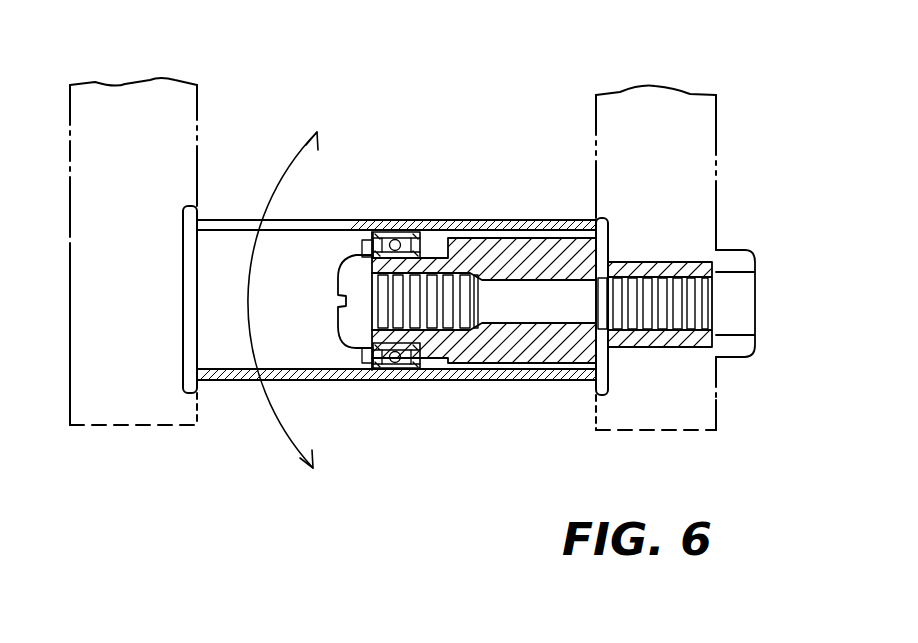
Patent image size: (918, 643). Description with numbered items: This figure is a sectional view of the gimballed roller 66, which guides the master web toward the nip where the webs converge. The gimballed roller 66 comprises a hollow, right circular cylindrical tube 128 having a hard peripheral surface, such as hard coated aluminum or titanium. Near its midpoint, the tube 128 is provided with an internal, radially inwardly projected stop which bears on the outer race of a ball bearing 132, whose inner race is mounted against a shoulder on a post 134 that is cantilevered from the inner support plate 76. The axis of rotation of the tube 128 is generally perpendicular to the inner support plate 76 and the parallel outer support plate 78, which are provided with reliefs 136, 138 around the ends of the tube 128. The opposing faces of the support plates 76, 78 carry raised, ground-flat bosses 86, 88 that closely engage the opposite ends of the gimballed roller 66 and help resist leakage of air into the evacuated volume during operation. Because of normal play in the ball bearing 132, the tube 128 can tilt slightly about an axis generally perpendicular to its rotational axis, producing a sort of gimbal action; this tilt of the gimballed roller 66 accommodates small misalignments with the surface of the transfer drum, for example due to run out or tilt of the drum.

The gimballed roller 66 is at (480, 146).
The inner support plate 76 is at (716, 408).
The outer support plate 78 is at (82, 398).
The boss 86 is at (198, 126).
The boss 88 is at (596, 118).
The tube 128 is at (222, 381).
The ball bearing 132 is at (408, 231).
The post 134 is at (567, 355).
The relief 136 is at (608, 232).
The relief 138 is at (183, 284).